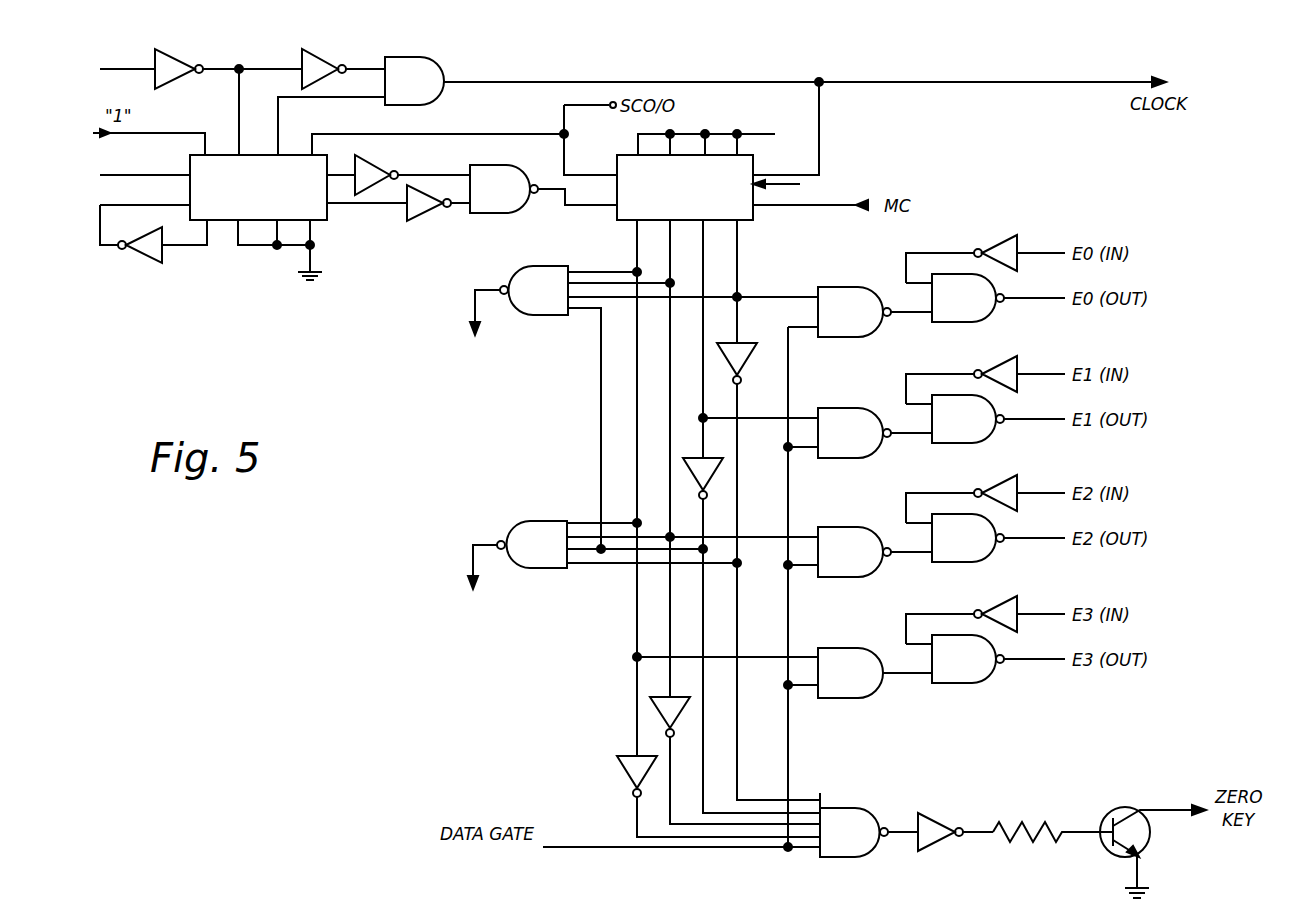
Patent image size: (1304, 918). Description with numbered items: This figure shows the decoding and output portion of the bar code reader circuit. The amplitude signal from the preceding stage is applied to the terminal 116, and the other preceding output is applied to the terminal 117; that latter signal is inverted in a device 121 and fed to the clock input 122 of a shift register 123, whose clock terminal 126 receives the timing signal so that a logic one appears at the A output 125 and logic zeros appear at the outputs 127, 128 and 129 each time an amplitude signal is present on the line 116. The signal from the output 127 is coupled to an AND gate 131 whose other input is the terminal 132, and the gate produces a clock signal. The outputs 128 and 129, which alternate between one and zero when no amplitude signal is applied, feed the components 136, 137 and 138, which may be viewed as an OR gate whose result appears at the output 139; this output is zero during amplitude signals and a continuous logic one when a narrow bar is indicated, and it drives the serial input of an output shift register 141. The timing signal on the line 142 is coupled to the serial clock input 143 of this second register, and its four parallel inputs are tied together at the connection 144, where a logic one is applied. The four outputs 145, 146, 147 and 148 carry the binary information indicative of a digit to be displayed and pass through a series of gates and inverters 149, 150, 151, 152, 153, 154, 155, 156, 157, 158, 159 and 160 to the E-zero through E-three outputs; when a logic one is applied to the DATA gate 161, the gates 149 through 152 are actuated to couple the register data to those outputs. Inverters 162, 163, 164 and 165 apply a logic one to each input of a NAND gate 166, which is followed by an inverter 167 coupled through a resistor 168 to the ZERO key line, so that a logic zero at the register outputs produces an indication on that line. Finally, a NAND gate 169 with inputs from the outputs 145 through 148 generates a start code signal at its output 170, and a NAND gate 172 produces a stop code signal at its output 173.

The terminal 116 is at (116, 172).
The terminal 117 is at (112, 67).
The inverting device 121 is at (180, 53).
The clock input 122 is at (239, 96).
The shift register 123 is at (301, 145).
The A output 125 is at (207, 249).
The clock terminal 126 is at (346, 131).
The shift register output 127 is at (278, 108).
The shift register output 128 is at (337, 173).
The shift register output 129 is at (348, 208).
The AND gate 131 is at (432, 55).
The terminal 132 is at (357, 62).
The OR gate component 136 is at (380, 165).
The OR gate component 137 is at (433, 210).
The OR gate component 138 is at (504, 169).
The OR gate output 139 is at (548, 191).
The output shift register 141 is at (796, 186).
The timing signal line 142 is at (562, 114).
The serial clock input 143 is at (577, 176).
The parallel input connection 144 is at (722, 135).
The shift register output 145 is at (636, 248).
The shift register output 146 is at (668, 264).
The shift register output 147 is at (703, 266).
The shift register output 148 is at (740, 259).
The gate 149 is at (863, 275).
The gate 150 is at (856, 407).
The gate 151 is at (847, 522).
The gate 152 is at (852, 644).
The inverter 153 is at (1002, 237).
The gate 154 is at (968, 322).
The gate 155 is at (948, 444).
The inverter 156 is at (996, 389).
The gate 157 is at (955, 563).
The inverter 158 is at (998, 505).
The gate 159 is at (953, 684).
The inverter 160 is at (1006, 627).
The DATA gate 161 is at (592, 848).
The inverter 162 is at (745, 358).
The inverter 163 is at (711, 478).
The inverter 164 is at (681, 718).
The inverter 165 is at (621, 775).
The NAND gate 166 is at (862, 807).
The inverter 167 is at (935, 810).
The resistor 168 is at (1027, 823).
The NAND gate 169 is at (526, 262).
The start code output 170 is at (482, 285).
The NAND gate 172 is at (533, 517).
The stop code output 173 is at (485, 540).